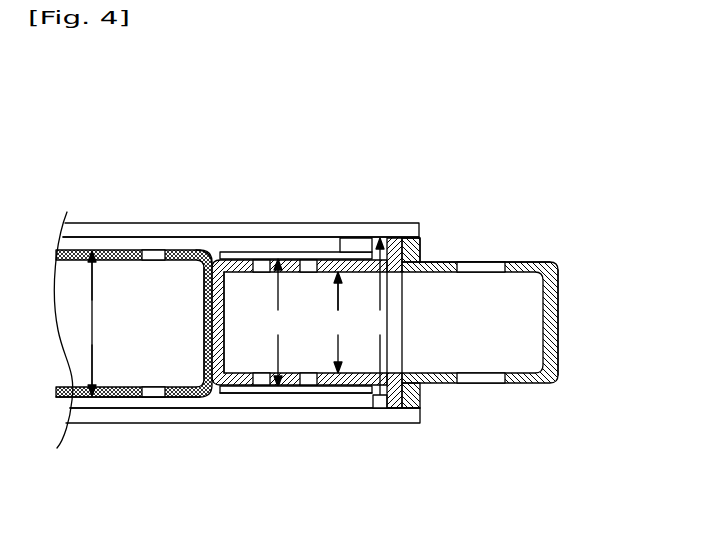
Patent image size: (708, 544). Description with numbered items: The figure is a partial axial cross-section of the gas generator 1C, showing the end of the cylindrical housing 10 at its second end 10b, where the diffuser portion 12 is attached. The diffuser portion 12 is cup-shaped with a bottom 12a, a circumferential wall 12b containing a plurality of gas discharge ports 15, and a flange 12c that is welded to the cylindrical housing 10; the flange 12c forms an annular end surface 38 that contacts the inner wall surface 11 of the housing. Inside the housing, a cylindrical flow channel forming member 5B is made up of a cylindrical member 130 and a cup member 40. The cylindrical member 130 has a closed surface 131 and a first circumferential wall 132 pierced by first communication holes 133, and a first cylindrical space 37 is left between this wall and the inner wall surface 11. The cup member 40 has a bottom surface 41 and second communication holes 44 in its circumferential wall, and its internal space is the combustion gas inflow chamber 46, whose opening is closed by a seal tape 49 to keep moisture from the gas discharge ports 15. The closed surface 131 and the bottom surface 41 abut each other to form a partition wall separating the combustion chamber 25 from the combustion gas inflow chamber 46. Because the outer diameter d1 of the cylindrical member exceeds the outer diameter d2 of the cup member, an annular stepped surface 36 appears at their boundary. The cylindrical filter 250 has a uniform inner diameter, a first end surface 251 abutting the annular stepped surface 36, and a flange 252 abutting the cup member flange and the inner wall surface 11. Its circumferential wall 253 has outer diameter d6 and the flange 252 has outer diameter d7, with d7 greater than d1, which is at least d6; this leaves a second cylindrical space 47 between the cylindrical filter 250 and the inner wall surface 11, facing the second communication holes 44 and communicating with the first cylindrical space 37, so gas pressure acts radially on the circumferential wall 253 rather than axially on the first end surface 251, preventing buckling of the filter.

The gas generator 1C is at (290, 210).
The cylindrical housing 10 is at (352, 223).
The second end 10b is at (421, 417).
The inner wall surface 11 is at (268, 243).
The cylindrical flow channel forming member 5B is at (128, 158).
The cylindrical member 130 is at (134, 322).
The closed surface 131 is at (204, 305).
The first circumferential wall 132 is at (185, 398).
The first communication holes 133 is at (163, 387).
The cup member 40 is at (242, 252).
The combustion chamber 25 is at (187, 357).
The first end surface 251 is at (200, 262).
The cylindrical filter 250 is at (367, 244).
The flange 252 is at (420, 237).
The circumferential wall 253 is at (258, 394).
The annular stepped surface 36 is at (285, 393).
The first cylindrical space 37 is at (140, 406).
The annular end surface 38 is at (393, 409).
The bottom surface 41 is at (226, 352).
The second communication holes 44 is at (297, 273).
The combustion gas inflow chamber 46 is at (319, 364).
The second cylindrical space 47 is at (290, 401).
The seal tape 49 is at (402, 307).
The diffuser portion 12 is at (521, 298).
The bottom 12a is at (560, 337).
The circumferential wall 12b is at (531, 262).
The flange 12c is at (419, 253).
The gas discharge ports 15 is at (483, 384).
The outer diameter of cylindrical member d1 is at (92, 323).
The outer diameter of cup member d2 is at (338, 305).
The outer diameter of filter circumferential wall d6 is at (278, 323).
The outer diameter of filter flange d7 is at (380, 323).